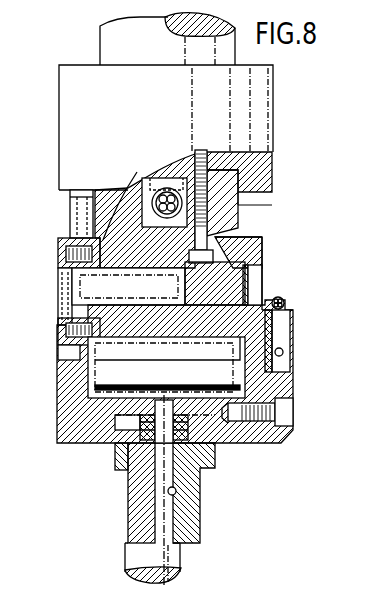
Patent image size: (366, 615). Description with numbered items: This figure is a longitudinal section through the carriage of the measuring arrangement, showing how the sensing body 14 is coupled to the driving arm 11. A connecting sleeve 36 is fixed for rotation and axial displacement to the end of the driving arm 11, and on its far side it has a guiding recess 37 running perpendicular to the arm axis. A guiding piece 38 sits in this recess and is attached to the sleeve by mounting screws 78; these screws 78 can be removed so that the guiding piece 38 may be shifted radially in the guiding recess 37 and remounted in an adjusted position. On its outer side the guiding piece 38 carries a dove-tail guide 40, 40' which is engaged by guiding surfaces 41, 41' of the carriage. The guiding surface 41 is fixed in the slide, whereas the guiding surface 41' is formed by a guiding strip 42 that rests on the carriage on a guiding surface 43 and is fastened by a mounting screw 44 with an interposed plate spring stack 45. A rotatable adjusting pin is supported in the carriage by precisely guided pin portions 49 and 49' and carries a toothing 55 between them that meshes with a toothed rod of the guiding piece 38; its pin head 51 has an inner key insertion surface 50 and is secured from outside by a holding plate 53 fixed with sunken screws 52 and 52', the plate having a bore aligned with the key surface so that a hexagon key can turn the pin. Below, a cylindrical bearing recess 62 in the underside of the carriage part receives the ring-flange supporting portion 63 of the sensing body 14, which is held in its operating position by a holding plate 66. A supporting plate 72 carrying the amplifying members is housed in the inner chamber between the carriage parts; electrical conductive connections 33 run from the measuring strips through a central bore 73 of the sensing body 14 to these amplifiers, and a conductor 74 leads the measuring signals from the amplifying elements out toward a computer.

The driving arm 11 is at (115, 43).
The sensing body 14 is at (125, 563).
The electrical conductive connections 33 is at (172, 533).
The connecting sleeve 36 is at (78, 88).
The guiding recess 37 is at (270, 160).
The guiding piece 38 is at (244, 203).
The dove-tail guide 40 is at (65, 213).
The dove-tail guide 40' is at (245, 203).
The guiding surface 41 is at (146, 203).
The guiding surface 41' is at (262, 247).
The guiding strip 42 is at (264, 237).
The guiding surface 43 is at (280, 320).
The mounting screw 44 is at (252, 287).
The plate spring stack 45 is at (250, 270).
The pin portion 49 is at (160, 352).
The pin portion 49' is at (166, 351).
The inner key insertion surface 50 is at (76, 298).
The pin head 51 is at (76, 290).
The sunken screw 52 is at (62, 341).
The sunken screw 52' is at (61, 241).
The holding plate 53 is at (66, 358).
The toothing 55 is at (167, 363).
The cylindrical bearing recess 62 is at (110, 444).
The supporting portion 63 is at (207, 433).
The holding plate 66 is at (121, 477).
The supporting plate 72 is at (108, 430).
The central bore 73 is at (178, 497).
The conductor 74 is at (285, 307).
The mounting screws 78 is at (198, 157).